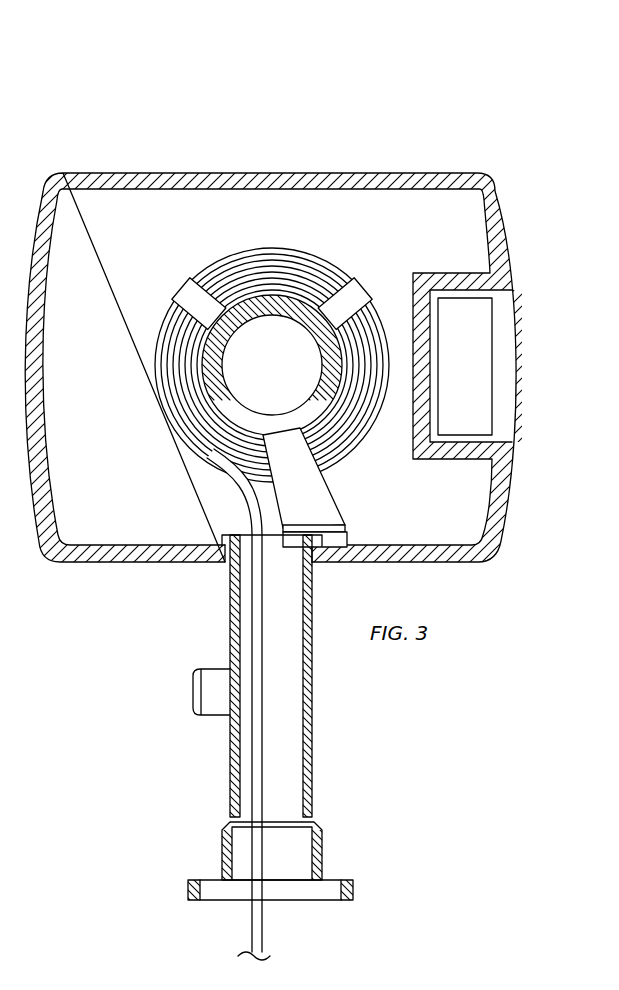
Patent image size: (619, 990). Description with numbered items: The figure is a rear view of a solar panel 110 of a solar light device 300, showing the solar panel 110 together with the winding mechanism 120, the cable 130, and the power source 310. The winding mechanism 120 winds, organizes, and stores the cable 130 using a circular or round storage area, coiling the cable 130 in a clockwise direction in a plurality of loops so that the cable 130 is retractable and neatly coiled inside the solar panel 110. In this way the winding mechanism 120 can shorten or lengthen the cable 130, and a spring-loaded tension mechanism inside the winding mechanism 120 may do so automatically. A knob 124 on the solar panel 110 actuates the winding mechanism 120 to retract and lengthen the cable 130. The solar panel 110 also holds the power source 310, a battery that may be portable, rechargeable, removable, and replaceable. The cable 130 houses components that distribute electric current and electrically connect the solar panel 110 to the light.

The solar light device 300 is at (309, 541).
The solar panel 110 is at (493, 178).
The winding mechanism 120 is at (196, 297).
The cable 130 is at (341, 457).
The knob 124 is at (193, 687).
The power source 310 is at (465, 352).